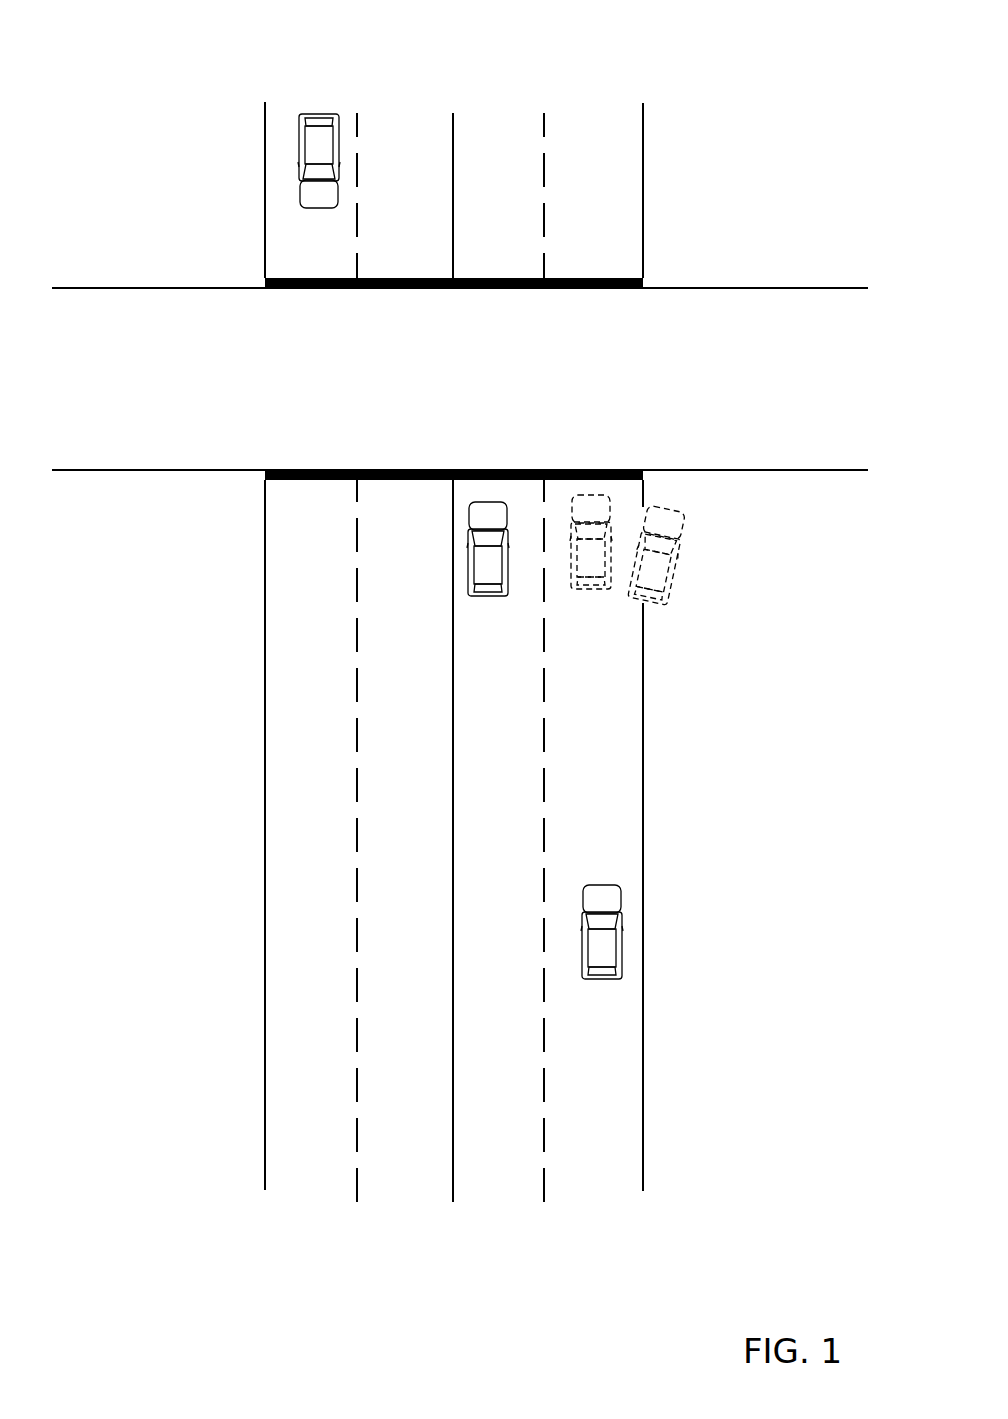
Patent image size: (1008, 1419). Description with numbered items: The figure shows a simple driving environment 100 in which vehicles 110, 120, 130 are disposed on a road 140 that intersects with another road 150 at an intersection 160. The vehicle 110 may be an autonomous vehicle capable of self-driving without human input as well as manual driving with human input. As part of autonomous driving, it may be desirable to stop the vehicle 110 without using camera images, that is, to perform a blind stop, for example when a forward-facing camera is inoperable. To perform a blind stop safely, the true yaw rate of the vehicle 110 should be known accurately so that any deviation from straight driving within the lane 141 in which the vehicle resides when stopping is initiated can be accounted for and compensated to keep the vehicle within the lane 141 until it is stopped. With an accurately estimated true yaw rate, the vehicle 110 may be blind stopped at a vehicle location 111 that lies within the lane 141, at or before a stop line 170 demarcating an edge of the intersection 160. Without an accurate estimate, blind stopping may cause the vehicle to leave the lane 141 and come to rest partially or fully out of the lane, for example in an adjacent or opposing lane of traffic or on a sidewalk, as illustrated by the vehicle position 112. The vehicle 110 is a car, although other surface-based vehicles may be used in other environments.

The driving environment 100 is at (172, 58).
The vehicle 110 is at (620, 953).
The vehicle location 111 is at (573, 585).
The vehicle position 112 is at (676, 547).
The vehicle 120 is at (475, 560).
The vehicle 130 is at (300, 150).
The road 140 is at (450, 1318).
The lane 141 is at (600, 1233).
The road 150 is at (157, 382).
The intersection 160 is at (482, 371).
The stop line 170 is at (620, 470).